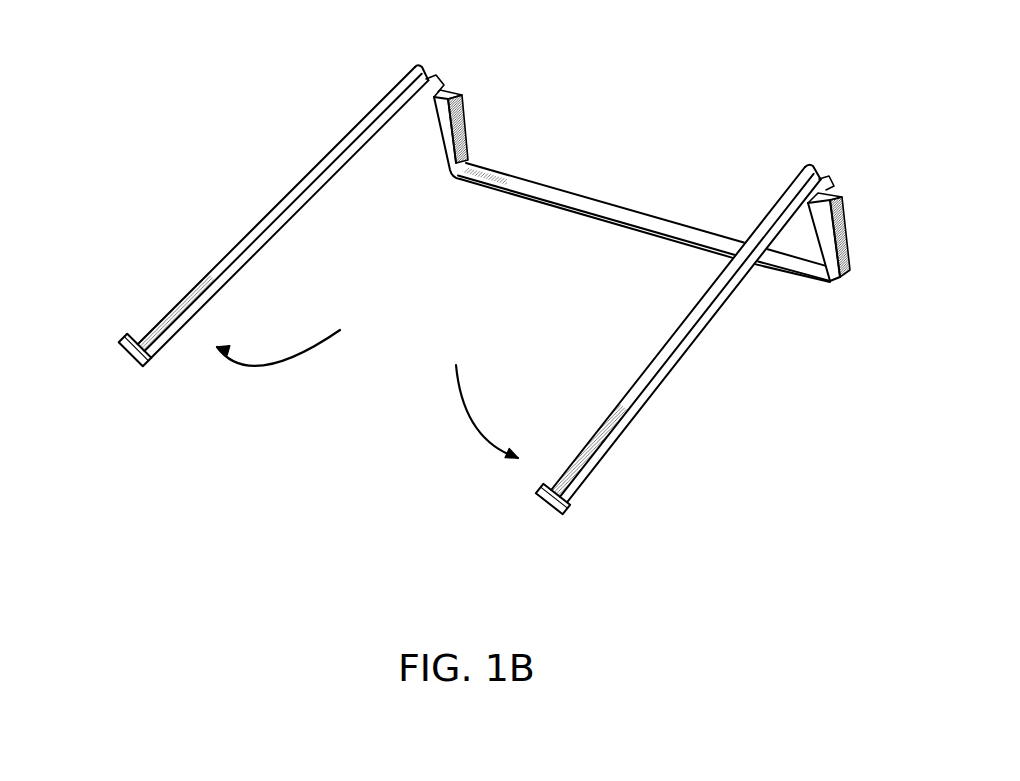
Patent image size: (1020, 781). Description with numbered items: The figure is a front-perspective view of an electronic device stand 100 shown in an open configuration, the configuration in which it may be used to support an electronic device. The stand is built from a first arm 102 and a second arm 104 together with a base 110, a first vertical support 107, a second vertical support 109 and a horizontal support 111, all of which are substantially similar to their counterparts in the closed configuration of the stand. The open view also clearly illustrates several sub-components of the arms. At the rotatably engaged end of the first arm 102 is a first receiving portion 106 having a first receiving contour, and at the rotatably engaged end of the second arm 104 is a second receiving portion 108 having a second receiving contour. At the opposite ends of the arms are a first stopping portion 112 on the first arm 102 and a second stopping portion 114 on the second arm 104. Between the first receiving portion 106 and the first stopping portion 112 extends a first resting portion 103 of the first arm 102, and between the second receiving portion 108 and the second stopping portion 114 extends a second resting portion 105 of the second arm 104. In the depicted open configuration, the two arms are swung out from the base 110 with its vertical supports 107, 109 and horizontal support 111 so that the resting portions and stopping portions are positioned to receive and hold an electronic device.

The electronic device stand 100 is at (213, 62).
The first arm 102 is at (293, 210).
The first resting portion 103 is at (270, 213).
The second arm 104 is at (668, 374).
The second resting portion 105 is at (650, 375).
The first receiving portion 106 is at (467, 70).
The first vertical support 107 is at (458, 122).
The second receiving portion 108 is at (823, 182).
The second vertical support 109 is at (847, 233).
The base 110 is at (589, 192).
The horizontal support 111 is at (712, 238).
The first stopping portion 112 is at (127, 350).
The second stopping portion 114 is at (548, 500).